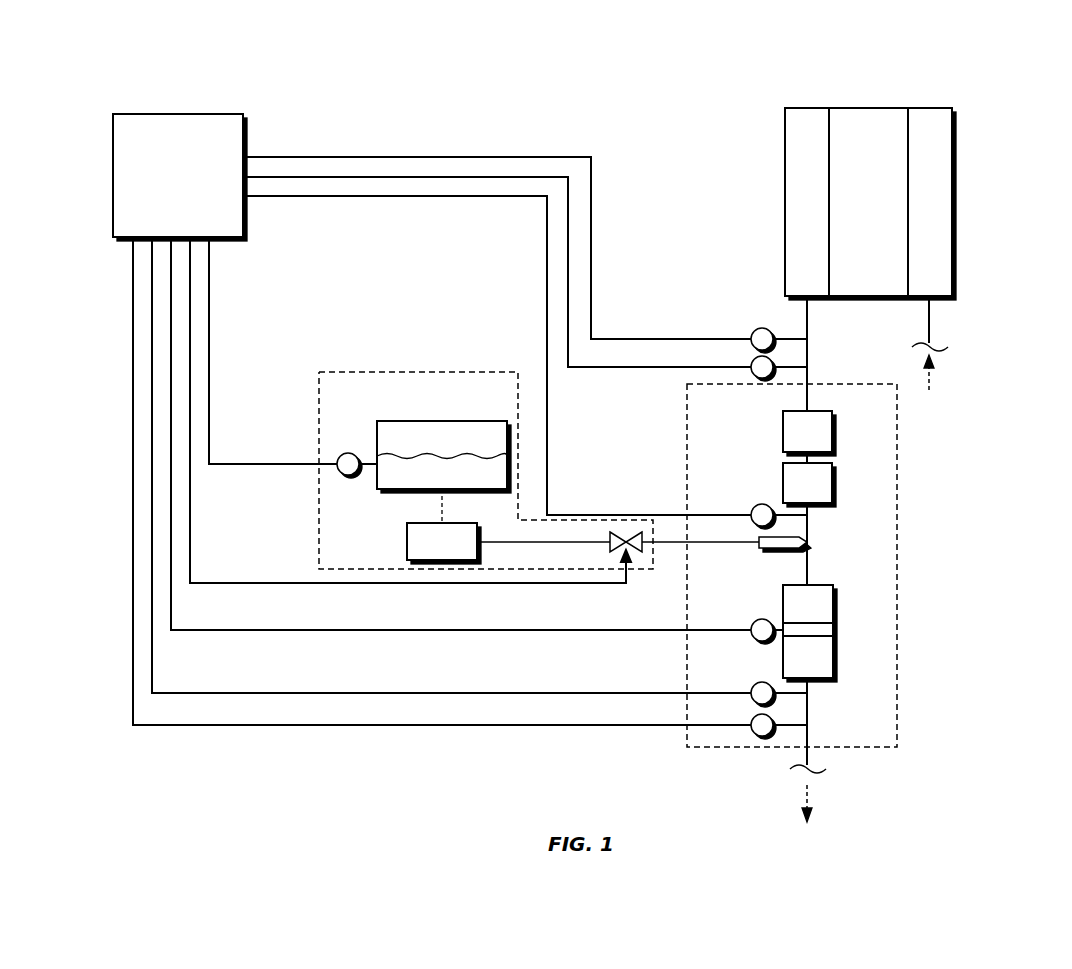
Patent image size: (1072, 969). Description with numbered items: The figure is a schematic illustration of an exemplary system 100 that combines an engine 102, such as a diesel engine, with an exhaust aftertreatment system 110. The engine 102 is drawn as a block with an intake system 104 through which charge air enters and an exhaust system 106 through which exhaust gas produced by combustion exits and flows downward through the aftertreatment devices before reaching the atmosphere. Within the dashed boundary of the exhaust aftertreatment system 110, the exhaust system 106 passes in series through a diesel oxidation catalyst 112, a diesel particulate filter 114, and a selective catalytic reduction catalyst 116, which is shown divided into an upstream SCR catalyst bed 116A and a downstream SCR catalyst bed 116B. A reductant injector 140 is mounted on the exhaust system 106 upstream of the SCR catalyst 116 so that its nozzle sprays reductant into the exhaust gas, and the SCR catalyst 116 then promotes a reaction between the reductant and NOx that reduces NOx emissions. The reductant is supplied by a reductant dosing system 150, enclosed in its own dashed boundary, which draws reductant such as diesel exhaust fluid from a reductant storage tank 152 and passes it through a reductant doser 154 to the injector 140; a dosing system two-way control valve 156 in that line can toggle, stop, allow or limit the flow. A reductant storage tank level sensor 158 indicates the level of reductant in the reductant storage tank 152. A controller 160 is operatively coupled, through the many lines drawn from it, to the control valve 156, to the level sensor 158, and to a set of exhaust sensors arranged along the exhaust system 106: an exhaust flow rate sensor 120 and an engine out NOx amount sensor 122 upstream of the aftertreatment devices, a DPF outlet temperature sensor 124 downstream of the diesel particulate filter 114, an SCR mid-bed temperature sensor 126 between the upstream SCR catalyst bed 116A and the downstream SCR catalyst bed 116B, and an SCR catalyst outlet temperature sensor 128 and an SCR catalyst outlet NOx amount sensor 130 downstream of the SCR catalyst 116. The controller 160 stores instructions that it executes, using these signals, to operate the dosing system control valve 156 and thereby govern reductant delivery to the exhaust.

The system 100 is at (970, 88).
The engine 102 is at (865, 108).
The intake system 104 is at (931, 326).
The exhaust system 106 is at (813, 324).
The exhaust aftertreatment system 110 is at (898, 468).
The diesel oxidation catalyst 112 is at (828, 446).
The diesel particulate filter 114 is at (828, 497).
The SCR catalyst 116 is at (835, 620).
The upstream SCR catalyst bed 116A is at (816, 585).
The downstream SCR catalyst bed 116B is at (783, 660).
The exhaust flow rate sensor 120 is at (762, 328).
The engine out NOx amount sensor 122 is at (762, 380).
The DPF outlet temperature sensor 124 is at (760, 504).
The SCR mid-bed temperature sensor 126 is at (762, 619).
The SCR catalyst outlet temperature sensor 128 is at (756, 698).
The SCR catalyst outlet NOx amount sensor 130 is at (762, 736).
The reductant injector 140 is at (800, 537).
The reductant dosing system 150 is at (418, 372).
The reductant storage tank 152 is at (440, 421).
The reductant doser 154 is at (463, 555).
The dosing system two-way control valve 156 is at (626, 536).
The reductant storage tank level sensor 158 is at (352, 476).
The controller 160 is at (200, 190).